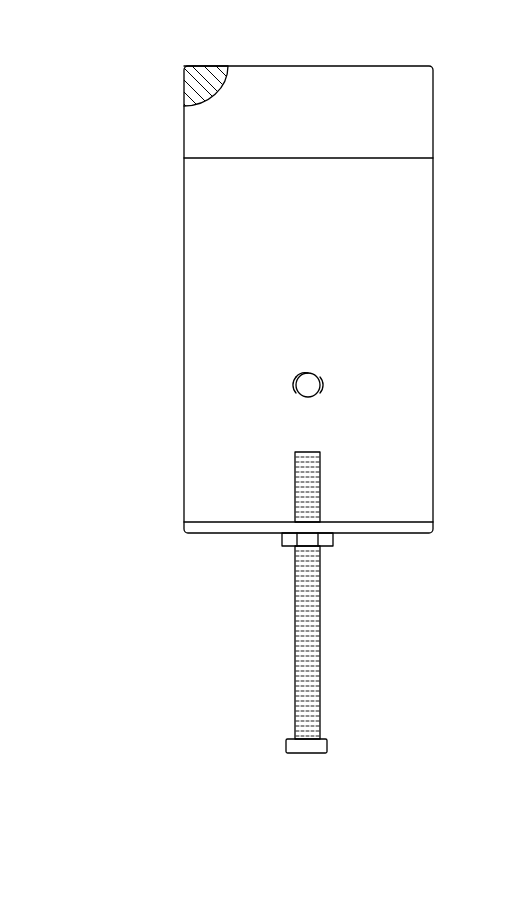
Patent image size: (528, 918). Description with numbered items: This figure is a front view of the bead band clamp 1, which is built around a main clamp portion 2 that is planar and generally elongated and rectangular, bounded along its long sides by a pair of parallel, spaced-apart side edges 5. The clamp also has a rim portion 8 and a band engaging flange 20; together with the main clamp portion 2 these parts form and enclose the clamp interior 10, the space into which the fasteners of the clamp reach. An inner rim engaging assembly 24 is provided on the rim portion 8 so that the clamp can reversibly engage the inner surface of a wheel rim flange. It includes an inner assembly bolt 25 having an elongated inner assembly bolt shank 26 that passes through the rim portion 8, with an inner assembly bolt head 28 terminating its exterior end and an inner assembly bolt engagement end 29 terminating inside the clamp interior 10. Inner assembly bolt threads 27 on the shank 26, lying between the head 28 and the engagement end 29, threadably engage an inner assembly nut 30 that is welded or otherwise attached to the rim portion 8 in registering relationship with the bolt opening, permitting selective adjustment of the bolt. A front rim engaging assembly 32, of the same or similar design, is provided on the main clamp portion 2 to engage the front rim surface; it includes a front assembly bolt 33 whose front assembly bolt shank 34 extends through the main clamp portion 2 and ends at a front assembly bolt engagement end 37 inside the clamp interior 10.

The bead band clamp 1 is at (144, 53).
The main clamp portion 2 is at (166, 250).
The side edges 5 is at (184, 288).
The rim portion 8 is at (326, 15).
The clamp interior 10 is at (416, 248).
The band engaging flange 20 is at (418, 125).
The inner rim engaging assembly 24 is at (262, 578).
The inner assembly bolt 25 is at (333, 640).
The inner assembly bolt shank 26 is at (322, 590).
The inner assembly bolt threads 27 is at (285, 610).
The inner assembly bolt head 28 is at (283, 745).
The inner assembly bolt engagement end 29 is at (308, 451).
The inner assembly nut 30 is at (282, 540).
The front rim engaging assembly 32 is at (323, 367).
The front assembly bolt 33 is at (298, 369).
The front assembly bolt shank 34 is at (320, 388).
The front assembly bolt engagement end 37 is at (296, 388).